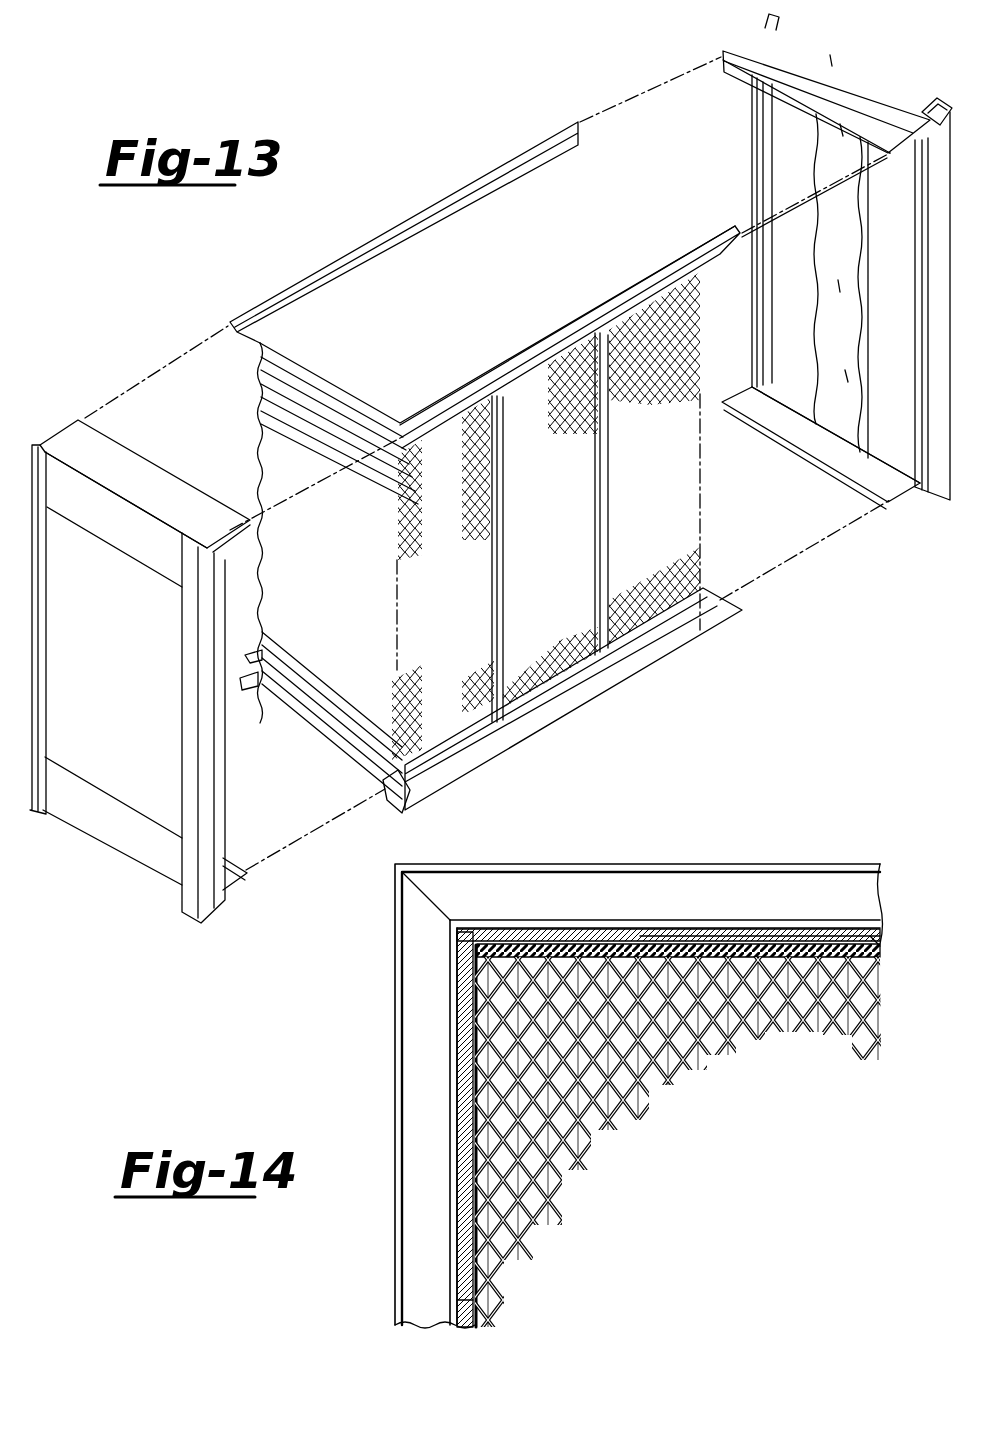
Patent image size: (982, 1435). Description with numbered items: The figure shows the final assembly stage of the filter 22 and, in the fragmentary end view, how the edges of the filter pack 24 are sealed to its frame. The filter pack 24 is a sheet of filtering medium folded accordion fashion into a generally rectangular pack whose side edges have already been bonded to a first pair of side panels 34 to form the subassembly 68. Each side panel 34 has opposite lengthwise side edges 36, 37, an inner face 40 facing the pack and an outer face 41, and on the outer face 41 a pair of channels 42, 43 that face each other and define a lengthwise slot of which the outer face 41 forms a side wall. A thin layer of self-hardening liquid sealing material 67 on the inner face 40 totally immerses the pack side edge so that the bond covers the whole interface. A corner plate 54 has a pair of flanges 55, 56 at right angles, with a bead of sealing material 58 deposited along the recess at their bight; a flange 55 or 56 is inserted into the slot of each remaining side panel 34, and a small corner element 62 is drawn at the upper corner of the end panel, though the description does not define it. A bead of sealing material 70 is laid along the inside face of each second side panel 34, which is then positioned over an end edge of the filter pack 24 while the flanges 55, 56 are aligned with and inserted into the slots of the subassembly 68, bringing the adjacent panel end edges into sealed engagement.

In FIG. 13, the filter 22 is at (392, 158).
In FIG. 14, the filter 22 is at (698, 848).
In FIG. 13, the filter pack 24 is at (546, 516).
In FIG. 14, the filter pack 24 is at (642, 1105).
In FIG. 13, the side panel 34 is at (483, 242).
In FIG. 14, the side panel 34 is at (830, 935).
In FIG. 13, the side edge 36 is at (255, 655).
In FIG. 13, the side edge 37 is at (585, 330).
In FIG. 13, the inner face 40 is at (814, 184).
In FIG. 13, the outer face 41 is at (422, 342).
In FIG. 13, the channel 42 is at (250, 690).
In FIG. 13, the channel 43 is at (395, 778).
In FIG. 14, the channel 43 is at (880, 942).
In FIG. 13, the corner plate 54 is at (100, 462).
In FIG. 14, the corner plate 54 is at (458, 985).
In FIG. 13, the flange 55 is at (150, 482).
In FIG. 14, the flange 55 is at (450, 1045).
In FIG. 13, the flange 56 is at (125, 540).
In FIG. 14, the flange 56 is at (635, 920).
In FIG. 13, the sealing material 58 is at (788, 402).
In FIG. 14, the sealing material 58 is at (465, 938).
In FIG. 13, the corner connector tab 62 is at (930, 104).
In FIG. 14, the corner connector tab 62 is at (455, 905).
In FIG. 13, the sealing material 67 is at (300, 715).
In FIG. 14, the sealing material 67 is at (770, 940).
In FIG. 13, the subassembly 68 is at (376, 240).
In FIG. 13, the sealing material 70 is at (840, 272).
In FIG. 14, the sealing material 70 is at (470, 1140).